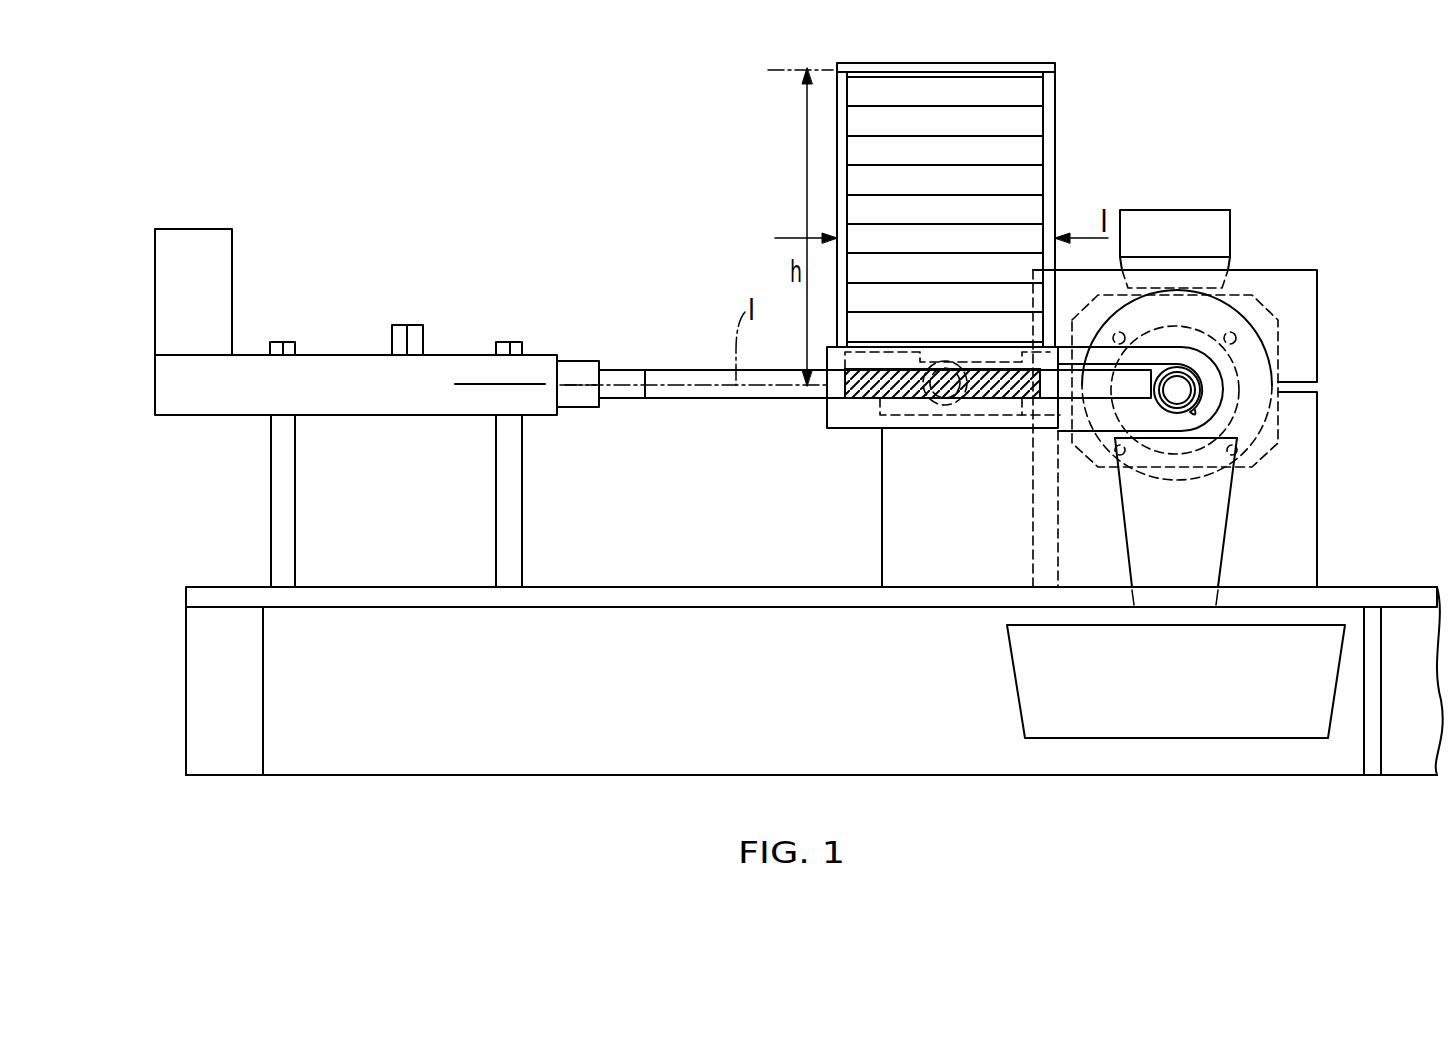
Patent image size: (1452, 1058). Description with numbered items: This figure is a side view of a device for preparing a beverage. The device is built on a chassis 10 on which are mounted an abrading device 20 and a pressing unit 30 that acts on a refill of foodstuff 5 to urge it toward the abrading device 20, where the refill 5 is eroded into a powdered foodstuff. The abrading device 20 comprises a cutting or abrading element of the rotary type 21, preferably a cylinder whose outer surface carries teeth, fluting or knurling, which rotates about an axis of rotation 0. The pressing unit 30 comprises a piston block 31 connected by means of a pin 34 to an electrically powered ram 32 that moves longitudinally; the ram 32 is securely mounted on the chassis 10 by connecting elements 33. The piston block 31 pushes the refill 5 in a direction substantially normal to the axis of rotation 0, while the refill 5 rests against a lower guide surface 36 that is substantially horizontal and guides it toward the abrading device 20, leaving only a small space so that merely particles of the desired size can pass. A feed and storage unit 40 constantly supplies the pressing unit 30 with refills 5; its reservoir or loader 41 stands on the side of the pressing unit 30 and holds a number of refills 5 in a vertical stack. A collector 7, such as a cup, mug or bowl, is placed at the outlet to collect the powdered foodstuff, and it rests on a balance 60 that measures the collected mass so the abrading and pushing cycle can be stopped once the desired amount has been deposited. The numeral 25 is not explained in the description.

The chassis 10 is at (162, 599).
The abrading device 20 is at (1292, 308).
The cutting or abrading element of the rotary type 21 is at (1205, 378).
The forming die 25 is at (1198, 365).
The pressing unit 30 is at (668, 352).
The piston block 31 is at (878, 398).
The ram 32 is at (455, 376).
The connecting elements 33 is at (496, 532).
The pin 34 is at (663, 398).
The lower guide surface 36 is at (845, 404).
The feed and storage unit 40 is at (789, 187).
The reservoir or loader 41 is at (1055, 155).
The refill of foodstuff 5 is at (1087, 383).
The collector 7 is at (1252, 527).
The balance 60 is at (1035, 690).
The axis of rotation 0 is at (1205, 398).